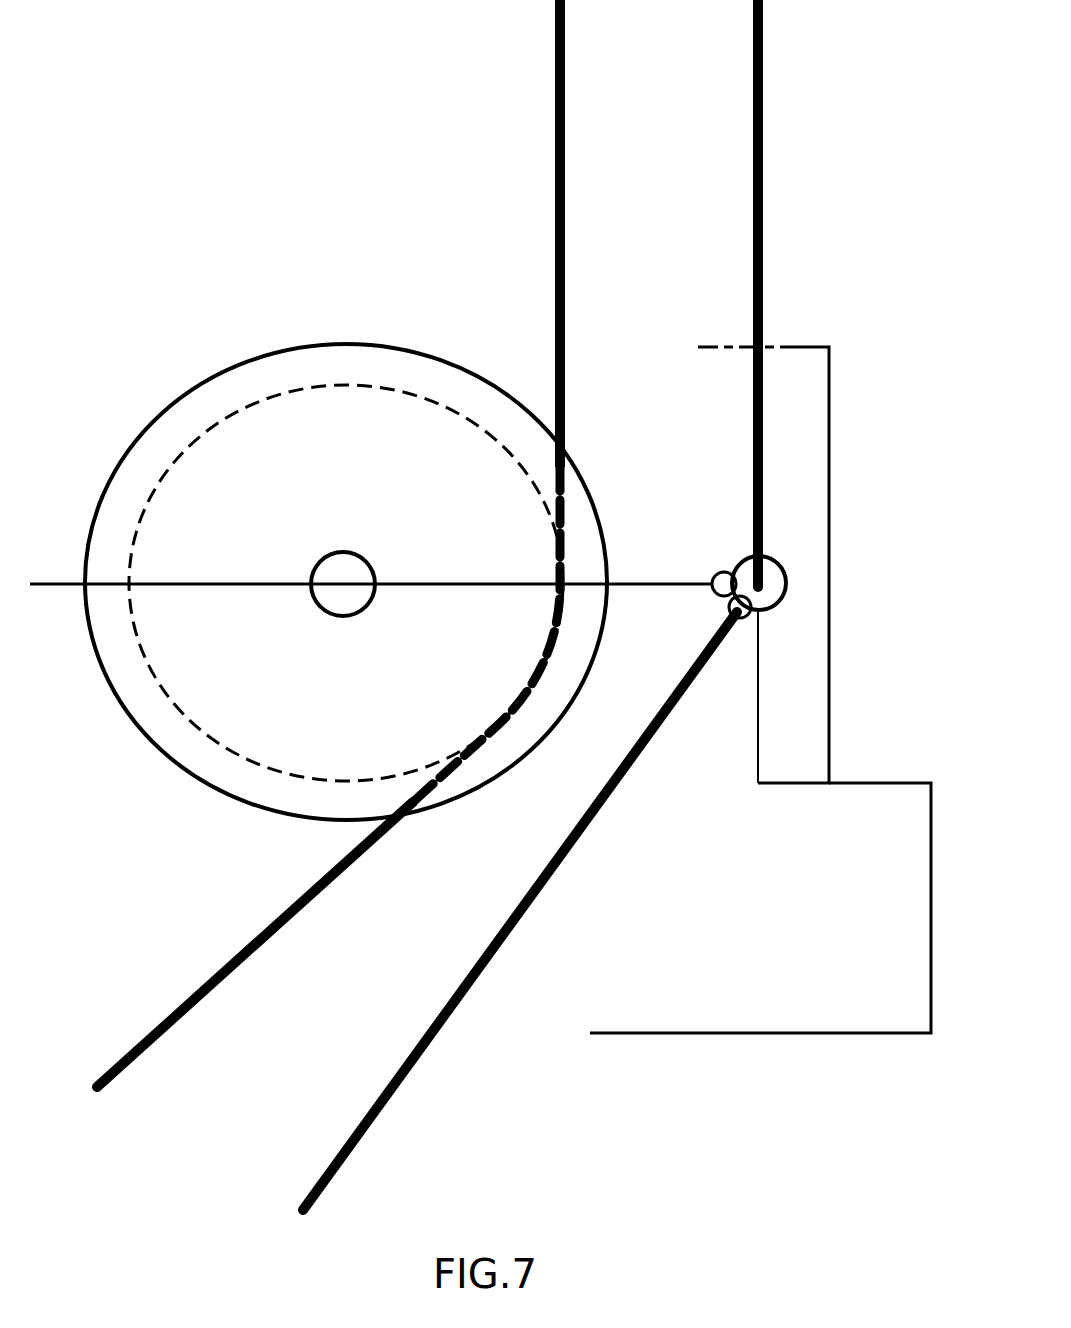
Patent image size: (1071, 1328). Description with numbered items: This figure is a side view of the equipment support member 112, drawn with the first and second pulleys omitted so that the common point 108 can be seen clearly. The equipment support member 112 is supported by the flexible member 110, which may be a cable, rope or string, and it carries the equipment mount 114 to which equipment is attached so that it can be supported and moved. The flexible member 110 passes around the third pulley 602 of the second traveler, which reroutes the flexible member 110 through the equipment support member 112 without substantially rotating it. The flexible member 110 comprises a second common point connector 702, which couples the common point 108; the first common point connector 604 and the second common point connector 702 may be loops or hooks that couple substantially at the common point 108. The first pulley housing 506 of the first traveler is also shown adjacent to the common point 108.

The equipment support member 112 is at (250, 149).
The flexible member 110 is at (555, 122).
The third pulley 602 is at (160, 413).
The first common point connector 604 is at (722, 570).
The second common point connector 702 is at (733, 606).
The common point 108 is at (775, 608).
The first pulley housing 506 is at (830, 500).
The equipment mount 114 is at (931, 937).